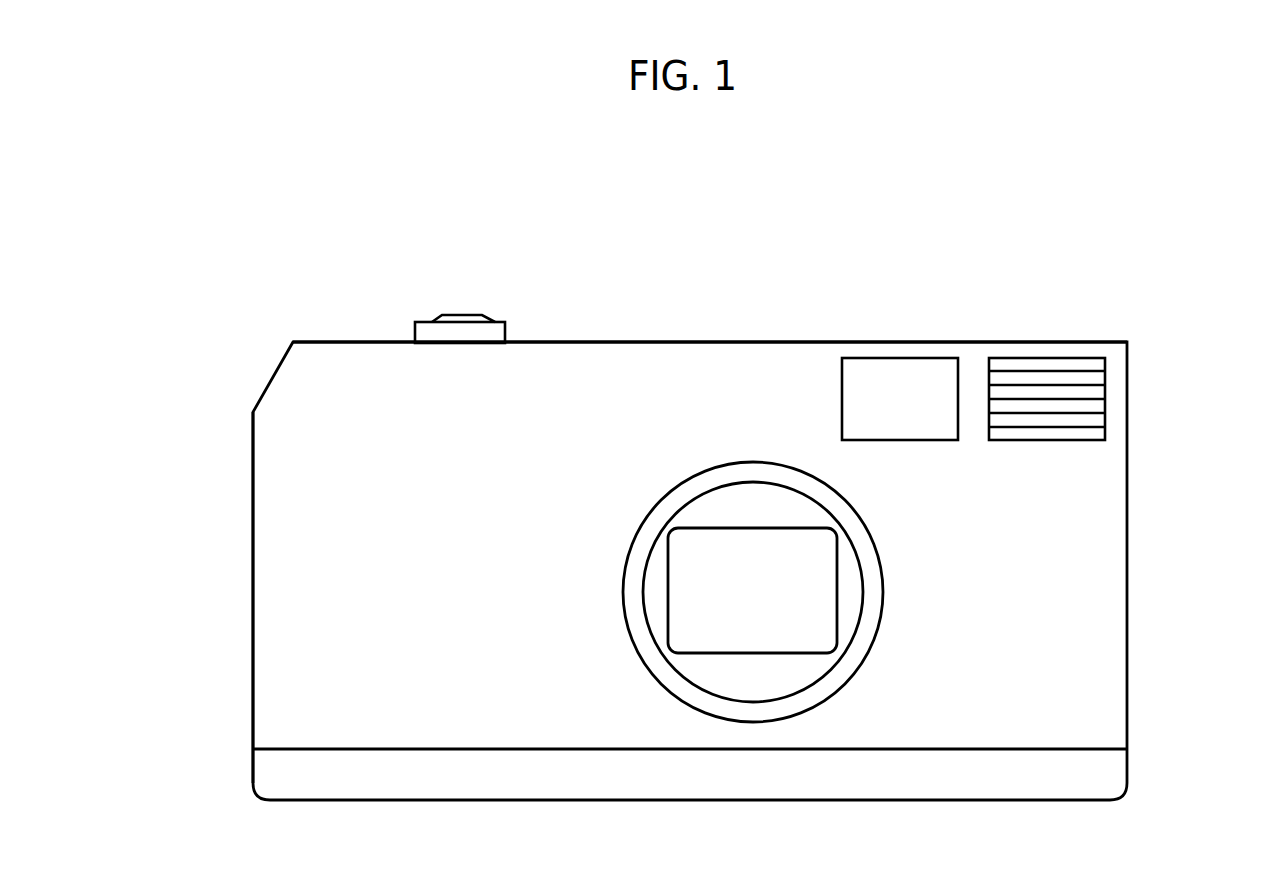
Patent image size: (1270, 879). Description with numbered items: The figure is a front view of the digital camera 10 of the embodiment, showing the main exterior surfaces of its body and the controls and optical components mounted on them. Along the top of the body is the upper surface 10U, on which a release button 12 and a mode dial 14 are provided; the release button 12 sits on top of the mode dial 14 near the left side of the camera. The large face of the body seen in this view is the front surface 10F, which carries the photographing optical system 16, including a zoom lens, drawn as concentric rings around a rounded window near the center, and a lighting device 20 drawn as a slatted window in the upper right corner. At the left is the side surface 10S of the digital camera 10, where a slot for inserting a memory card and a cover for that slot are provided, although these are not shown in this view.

The digital camera 10 is at (801, 260).
The upper surface 10U is at (663, 342).
The side surface 10S is at (252, 576).
The front surface 10F is at (1090, 679).
The release button 12 is at (464, 315).
The mode dial 14 is at (495, 321).
The photographing optical system 16 is at (905, 593).
The lighting device 20 is at (1047, 357).